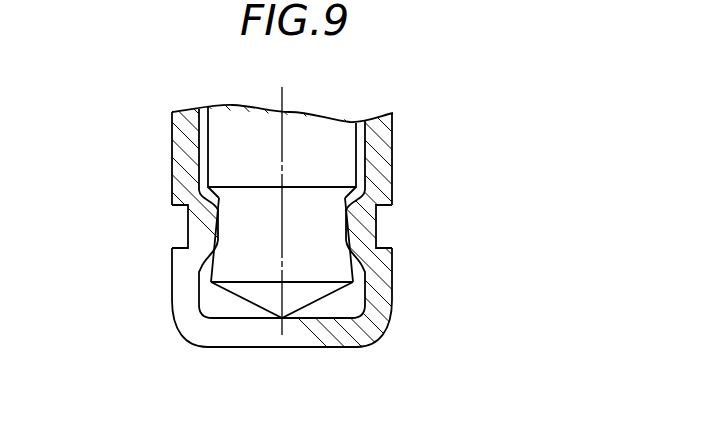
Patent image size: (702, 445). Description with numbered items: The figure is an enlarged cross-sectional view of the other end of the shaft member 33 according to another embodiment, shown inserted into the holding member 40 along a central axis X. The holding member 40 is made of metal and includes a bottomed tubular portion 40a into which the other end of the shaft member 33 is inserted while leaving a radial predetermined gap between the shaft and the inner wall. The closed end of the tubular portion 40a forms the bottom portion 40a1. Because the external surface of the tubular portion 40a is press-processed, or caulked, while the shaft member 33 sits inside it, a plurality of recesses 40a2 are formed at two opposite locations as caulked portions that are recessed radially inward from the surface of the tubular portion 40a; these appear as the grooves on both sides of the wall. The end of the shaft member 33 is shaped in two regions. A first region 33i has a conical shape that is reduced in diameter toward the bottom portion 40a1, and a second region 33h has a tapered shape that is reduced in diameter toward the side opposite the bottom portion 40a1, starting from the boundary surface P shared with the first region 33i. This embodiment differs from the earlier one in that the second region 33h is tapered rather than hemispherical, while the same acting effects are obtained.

The shaft member 33 is at (322, 128).
The second region 33h is at (355, 270).
The first region 33i is at (233, 298).
The boundary surface P is at (259, 284).
The holding member 40 is at (351, 222).
The tubular portion 40a is at (388, 155).
The bottom portion 40a1 is at (337, 343).
The recesses 40a2 is at (188, 233).
The central axis X is at (283, 198).